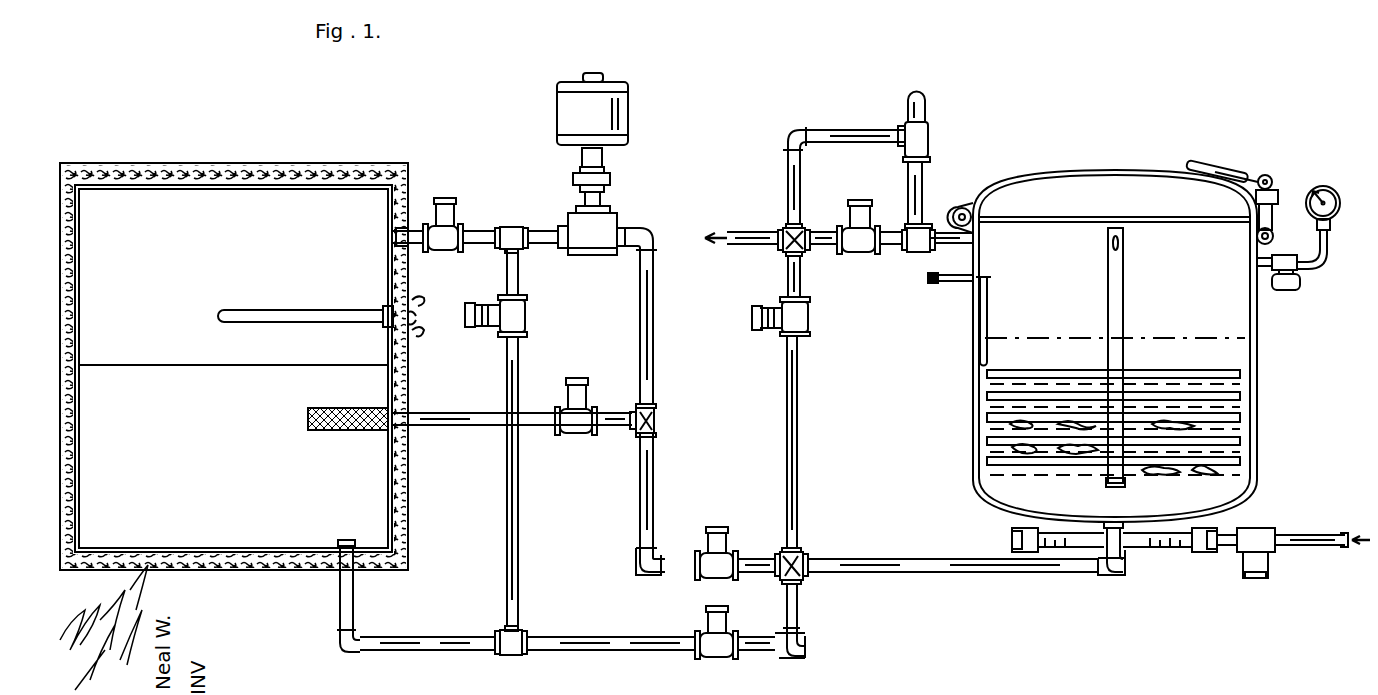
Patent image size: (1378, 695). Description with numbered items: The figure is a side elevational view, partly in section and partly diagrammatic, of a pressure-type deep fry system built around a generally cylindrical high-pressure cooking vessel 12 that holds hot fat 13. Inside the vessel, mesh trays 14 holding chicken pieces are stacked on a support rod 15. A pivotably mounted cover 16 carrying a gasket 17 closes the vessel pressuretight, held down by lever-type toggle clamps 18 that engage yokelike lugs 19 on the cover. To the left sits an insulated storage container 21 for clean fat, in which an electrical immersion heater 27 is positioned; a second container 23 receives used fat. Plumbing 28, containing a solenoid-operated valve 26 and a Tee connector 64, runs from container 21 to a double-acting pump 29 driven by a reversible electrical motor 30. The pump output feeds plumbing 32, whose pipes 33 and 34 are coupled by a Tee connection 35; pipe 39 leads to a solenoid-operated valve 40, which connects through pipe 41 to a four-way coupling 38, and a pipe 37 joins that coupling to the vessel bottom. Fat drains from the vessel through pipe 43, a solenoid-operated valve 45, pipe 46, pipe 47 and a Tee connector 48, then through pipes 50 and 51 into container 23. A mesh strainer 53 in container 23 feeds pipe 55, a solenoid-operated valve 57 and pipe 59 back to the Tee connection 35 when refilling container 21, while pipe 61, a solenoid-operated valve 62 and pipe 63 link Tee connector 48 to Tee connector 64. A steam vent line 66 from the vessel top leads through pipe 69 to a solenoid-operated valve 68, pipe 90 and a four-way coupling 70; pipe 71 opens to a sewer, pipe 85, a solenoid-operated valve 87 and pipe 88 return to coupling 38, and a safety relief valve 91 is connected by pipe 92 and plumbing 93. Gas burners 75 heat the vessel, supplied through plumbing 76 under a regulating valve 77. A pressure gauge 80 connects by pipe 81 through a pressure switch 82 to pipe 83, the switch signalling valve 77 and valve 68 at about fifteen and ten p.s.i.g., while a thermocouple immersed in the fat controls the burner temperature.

The cooking vessel 12 is at (1258, 410).
The hot fat 13 is at (1248, 337).
The mesh trays 14 is at (985, 410).
The support rod 15 is at (1119, 310).
The cover 16 is at (1150, 156).
The gasket 17 is at (1046, 200).
The lever-type toggle clamps 18 is at (1250, 175).
The yokelike lugs 19 is at (1275, 225).
The storage container 21 is at (232, 195).
The storage container 23 is at (238, 548).
The solenoid-operated valve 26 is at (456, 204).
The electrical immersion heater 27 is at (324, 312).
The plumbing 28 is at (498, 213).
The double-acting pump 29 is at (602, 250).
The reversible electrical motor 30 is at (628, 114).
The plumbing 32 is at (666, 502).
The pipe 33 is at (654, 321).
The pipe 34 is at (640, 512).
The Tee connection 35 is at (658, 422).
The pipe 37 is at (932, 572).
The four-way coupling 38 is at (805, 552).
The pipe 39 is at (668, 580).
The solenoid-operated valve 40 is at (706, 560).
The pipe 41 is at (756, 556).
The pipe 43 is at (800, 606).
The solenoid-operated valve 45 is at (718, 655).
The pipe 46 is at (764, 636).
The pipe 47 is at (596, 652).
The Tee connector 48 is at (510, 656).
The pipe 50 is at (446, 622).
The pipe 51 is at (356, 620).
The mesh strainer 53 is at (348, 430).
The pipe 55 is at (460, 425).
The solenoid-operated valve 57 is at (580, 425).
The pipe 59 is at (628, 383).
The pipe 61 is at (520, 528).
The solenoid-operated valve 62 is at (530, 312).
The pipe 63 is at (520, 283).
The Tee connector 64 is at (520, 224).
The steam vent line 66 is at (940, 262).
The solenoid-operated valve 68 is at (854, 230).
The pipe 69 is at (892, 236).
The four-way coupling 70 is at (782, 228).
The pipe 71 is at (724, 232).
The gas burners 75 is at (1152, 550).
The plumbing 76 is at (1274, 520).
The regulating valve 77 is at (1258, 560).
The pressure gauge 80 is at (1331, 193).
The pipe 81 is at (1328, 248).
The pressure switch 82 is at (1301, 282).
The pipe 83 is at (1262, 270).
The pipe 85 is at (786, 276).
The solenoid-operated valve 87 is at (806, 333).
The pipe 88 is at (798, 443).
The pipe 90 is at (824, 248).
The safety relief valve 91 is at (926, 136).
The pipe 92 is at (924, 190).
The plumbing 93 is at (862, 114).